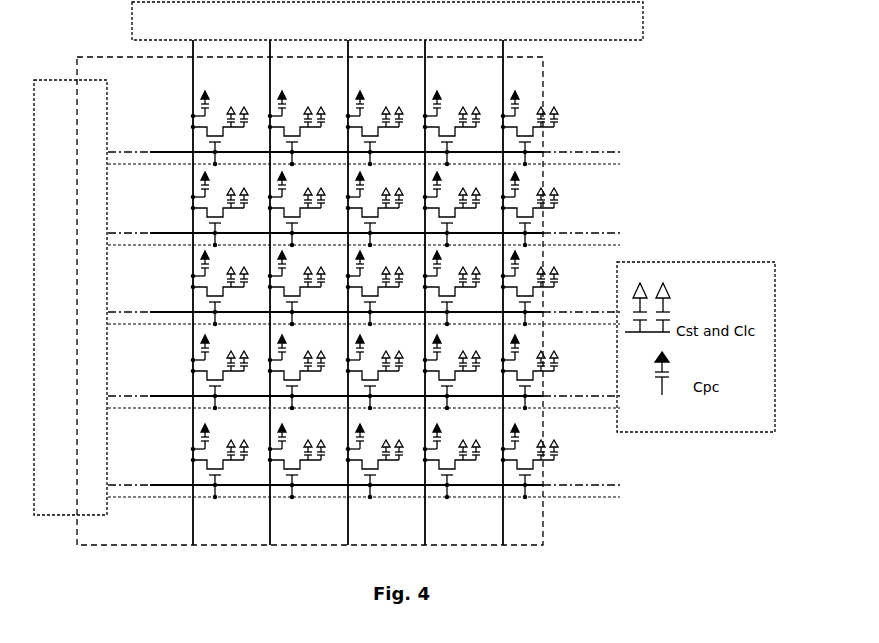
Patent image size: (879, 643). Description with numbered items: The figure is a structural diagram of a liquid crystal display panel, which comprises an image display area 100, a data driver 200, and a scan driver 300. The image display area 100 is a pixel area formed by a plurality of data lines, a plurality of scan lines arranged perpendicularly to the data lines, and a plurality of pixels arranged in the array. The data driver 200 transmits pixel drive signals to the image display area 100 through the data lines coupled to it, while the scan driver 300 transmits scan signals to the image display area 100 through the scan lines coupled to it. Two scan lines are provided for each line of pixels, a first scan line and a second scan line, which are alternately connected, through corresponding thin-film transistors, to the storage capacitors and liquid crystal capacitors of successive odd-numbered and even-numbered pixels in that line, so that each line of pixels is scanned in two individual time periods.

The image display area 100 is at (545, 110).
The data driver 200 is at (387, 21).
The scan driver 300 is at (70, 297).